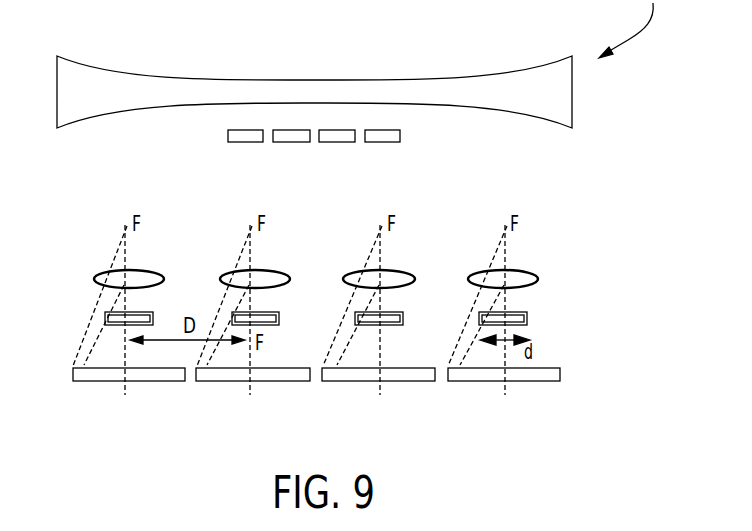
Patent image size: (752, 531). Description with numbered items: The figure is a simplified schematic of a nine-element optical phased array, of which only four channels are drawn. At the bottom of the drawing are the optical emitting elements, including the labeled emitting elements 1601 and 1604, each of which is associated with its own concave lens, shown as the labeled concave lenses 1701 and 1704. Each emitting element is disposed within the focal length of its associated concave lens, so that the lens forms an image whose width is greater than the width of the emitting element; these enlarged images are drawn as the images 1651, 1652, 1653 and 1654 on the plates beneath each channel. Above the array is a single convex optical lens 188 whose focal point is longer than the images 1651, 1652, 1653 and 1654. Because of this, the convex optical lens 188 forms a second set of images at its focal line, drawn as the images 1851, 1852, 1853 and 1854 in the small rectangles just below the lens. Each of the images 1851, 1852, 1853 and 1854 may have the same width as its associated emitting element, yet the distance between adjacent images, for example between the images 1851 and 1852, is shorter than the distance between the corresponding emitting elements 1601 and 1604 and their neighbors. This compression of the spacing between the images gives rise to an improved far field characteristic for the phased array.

The convex optical lens 188 is at (572, 93).
The image 1851 is at (243, 142).
The image 1852 is at (290, 142).
The image 1853 is at (335, 142).
The image 1854 is at (400, 135).
The concave lens 1701 is at (104, 277).
The concave lens 1704 is at (538, 278).
The optical emitting element 1601 is at (108, 318).
The optical emitting element 1604 is at (528, 318).
The image 1651 is at (95, 381).
The image 1652 is at (270, 381).
The image 1653 is at (387, 381).
The image 1654 is at (512, 381).